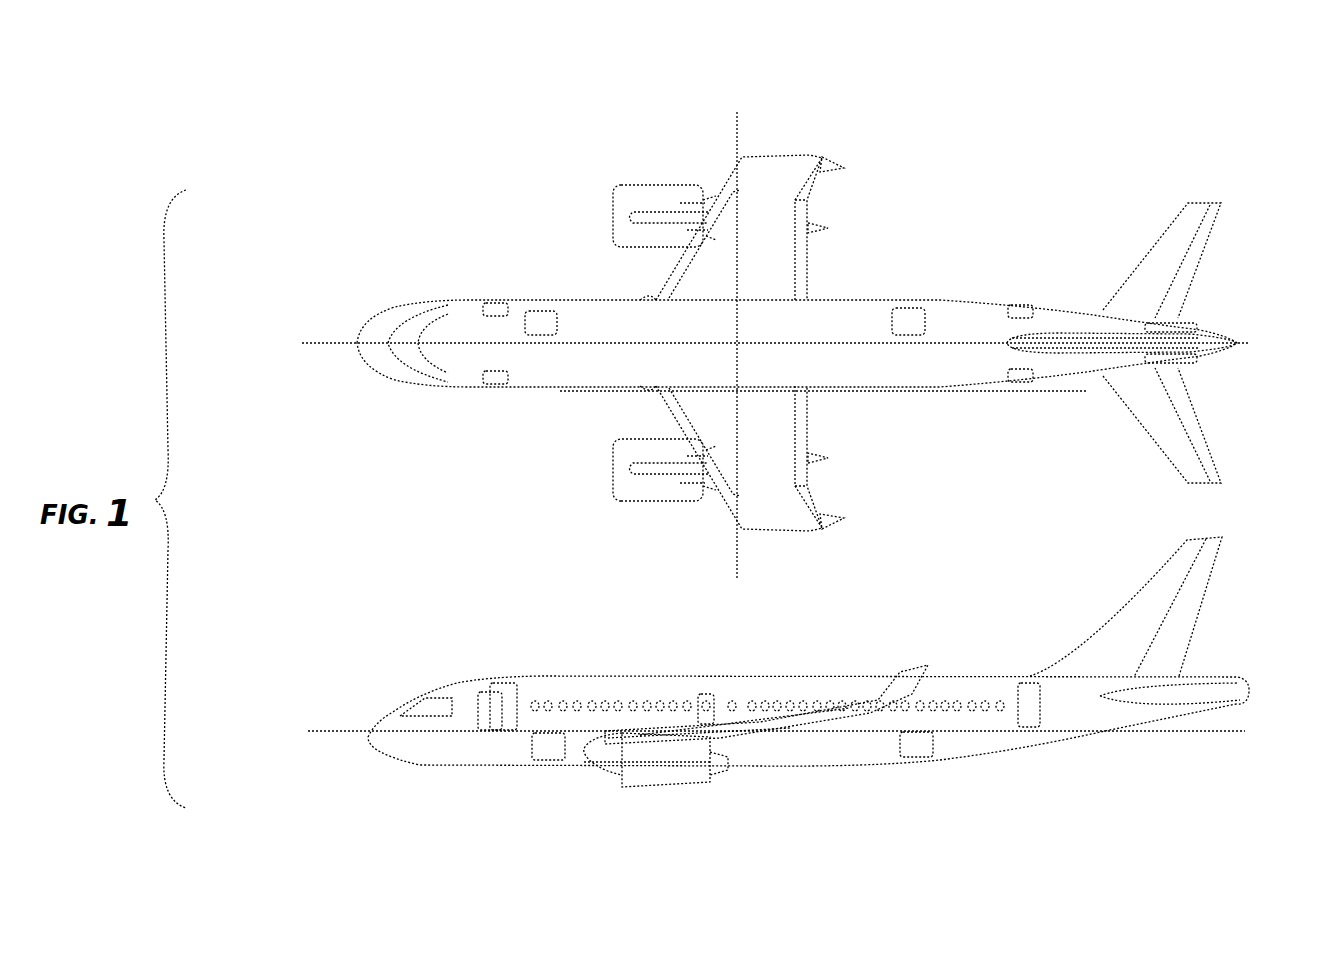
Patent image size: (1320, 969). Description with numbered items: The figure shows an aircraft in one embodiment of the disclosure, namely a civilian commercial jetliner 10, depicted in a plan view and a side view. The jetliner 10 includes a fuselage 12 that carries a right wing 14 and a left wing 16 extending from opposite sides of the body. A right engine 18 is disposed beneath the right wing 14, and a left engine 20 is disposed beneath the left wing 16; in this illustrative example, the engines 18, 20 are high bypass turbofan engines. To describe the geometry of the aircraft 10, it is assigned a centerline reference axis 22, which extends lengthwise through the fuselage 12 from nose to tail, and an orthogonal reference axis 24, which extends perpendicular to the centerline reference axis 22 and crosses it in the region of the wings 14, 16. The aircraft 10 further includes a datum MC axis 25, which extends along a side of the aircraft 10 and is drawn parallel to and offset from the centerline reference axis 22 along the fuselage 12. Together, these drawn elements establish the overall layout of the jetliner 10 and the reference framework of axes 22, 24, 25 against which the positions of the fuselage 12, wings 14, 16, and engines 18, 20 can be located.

The civilian commercial jetliner 10 is at (428, 175).
The fuselage 12 is at (953, 327).
The right wing 14 is at (758, 252).
The left wing 16 is at (767, 442).
The right engine 18 is at (632, 185).
The left engine 20 is at (612, 485).
The centerline reference axis 22 is at (340, 343).
The orthogonal reference axis 24 is at (735, 128).
The datum MC axis 25 is at (1068, 392).